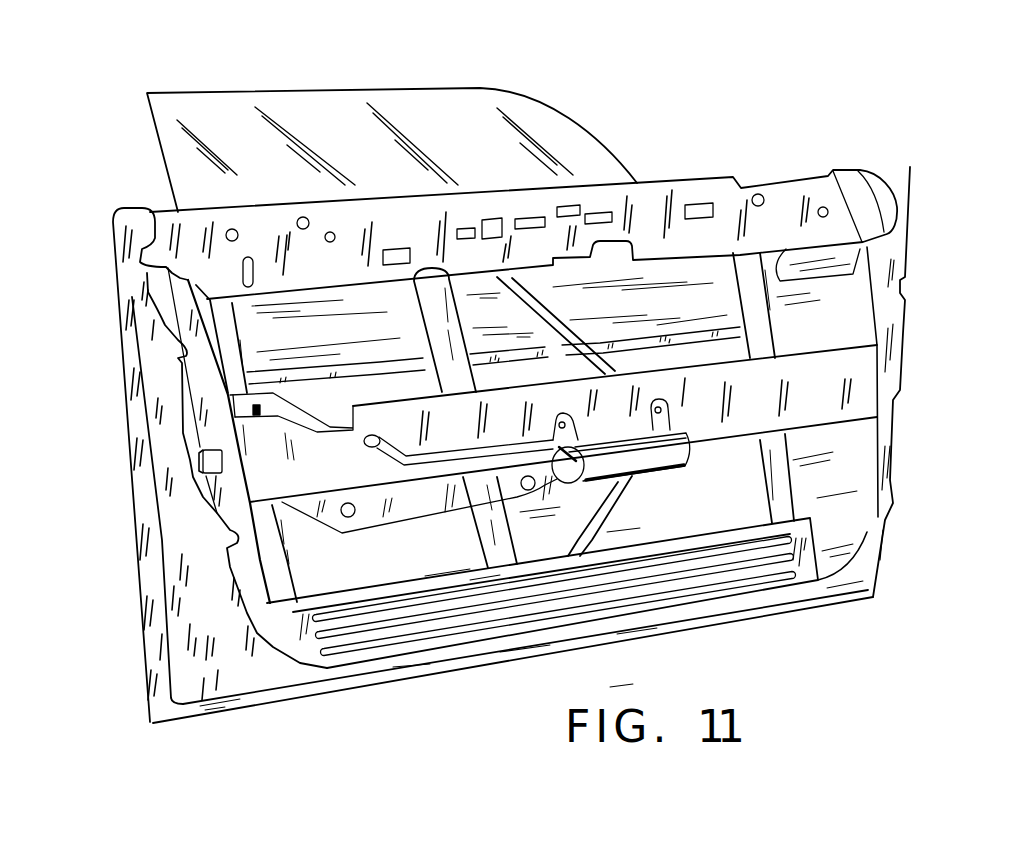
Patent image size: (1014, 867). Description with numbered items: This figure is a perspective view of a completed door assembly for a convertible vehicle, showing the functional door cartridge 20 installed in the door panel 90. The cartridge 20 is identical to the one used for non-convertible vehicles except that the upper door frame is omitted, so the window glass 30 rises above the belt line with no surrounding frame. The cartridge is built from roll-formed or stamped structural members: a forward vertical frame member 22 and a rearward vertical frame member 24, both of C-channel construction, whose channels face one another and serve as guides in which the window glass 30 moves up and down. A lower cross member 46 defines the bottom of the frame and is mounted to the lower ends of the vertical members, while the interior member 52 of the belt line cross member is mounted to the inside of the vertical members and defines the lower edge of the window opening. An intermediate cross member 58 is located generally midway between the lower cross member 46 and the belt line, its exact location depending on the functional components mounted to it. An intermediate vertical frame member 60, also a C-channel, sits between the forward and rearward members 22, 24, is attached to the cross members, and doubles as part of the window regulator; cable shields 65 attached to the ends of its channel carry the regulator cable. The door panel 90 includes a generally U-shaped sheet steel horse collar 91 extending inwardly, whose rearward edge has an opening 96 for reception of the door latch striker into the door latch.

The door cartridge 20 is at (767, 151).
The forward vertical frame member 22 is at (795, 486).
The rearward vertical frame member 24 is at (267, 603).
The window glass 30 is at (440, 87).
The lower cross member 46 is at (740, 522).
The interior member 52 is at (857, 272).
The intermediate cross member 58 is at (828, 348).
The intermediate vertical frame member 60 is at (481, 545).
The cable shields 65 is at (601, 513).
The door panel 90 is at (120, 317).
The horse collar 91 is at (192, 423).
The opening 96 is at (200, 467).